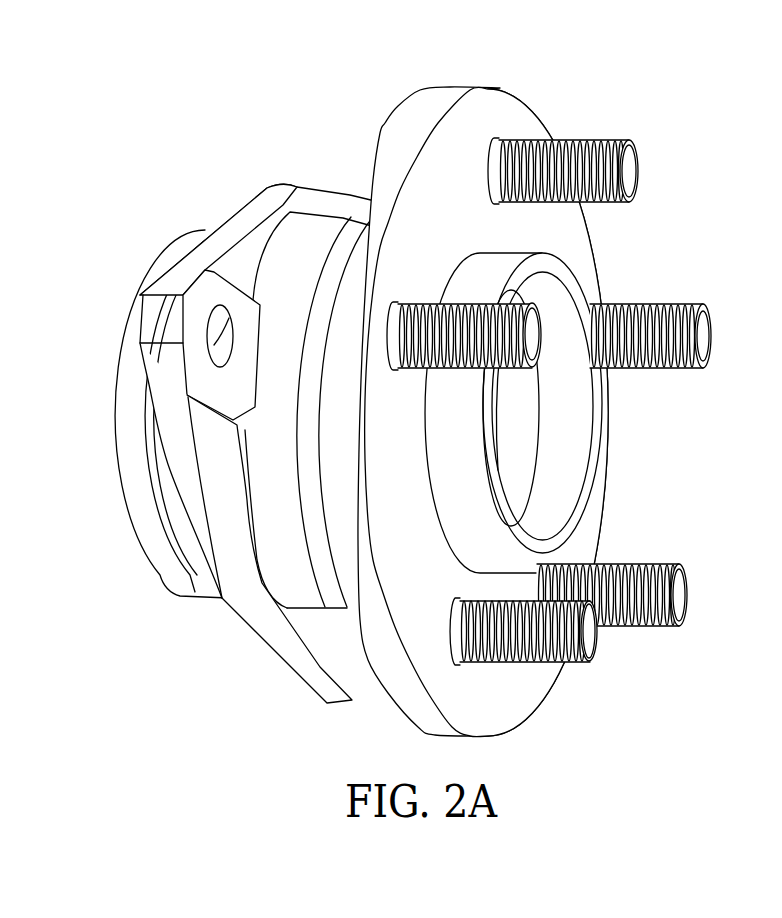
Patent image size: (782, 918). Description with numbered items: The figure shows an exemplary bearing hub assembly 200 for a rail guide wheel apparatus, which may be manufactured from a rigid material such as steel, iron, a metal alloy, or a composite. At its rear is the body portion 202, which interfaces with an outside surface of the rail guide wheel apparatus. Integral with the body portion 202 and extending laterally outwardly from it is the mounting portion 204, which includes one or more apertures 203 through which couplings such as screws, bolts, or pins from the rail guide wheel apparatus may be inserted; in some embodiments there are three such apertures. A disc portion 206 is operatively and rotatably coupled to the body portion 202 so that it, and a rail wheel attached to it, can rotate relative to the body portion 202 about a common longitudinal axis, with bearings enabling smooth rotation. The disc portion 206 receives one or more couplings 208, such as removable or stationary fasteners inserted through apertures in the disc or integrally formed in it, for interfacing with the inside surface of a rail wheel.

The bearing hub assembly 200 is at (277, 92).
The body portion 202 is at (138, 546).
The aperture 203 is at (233, 337).
The mounting portion 204 is at (153, 312).
The disc portion 206 is at (385, 152).
The couplings 208 is at (635, 170).